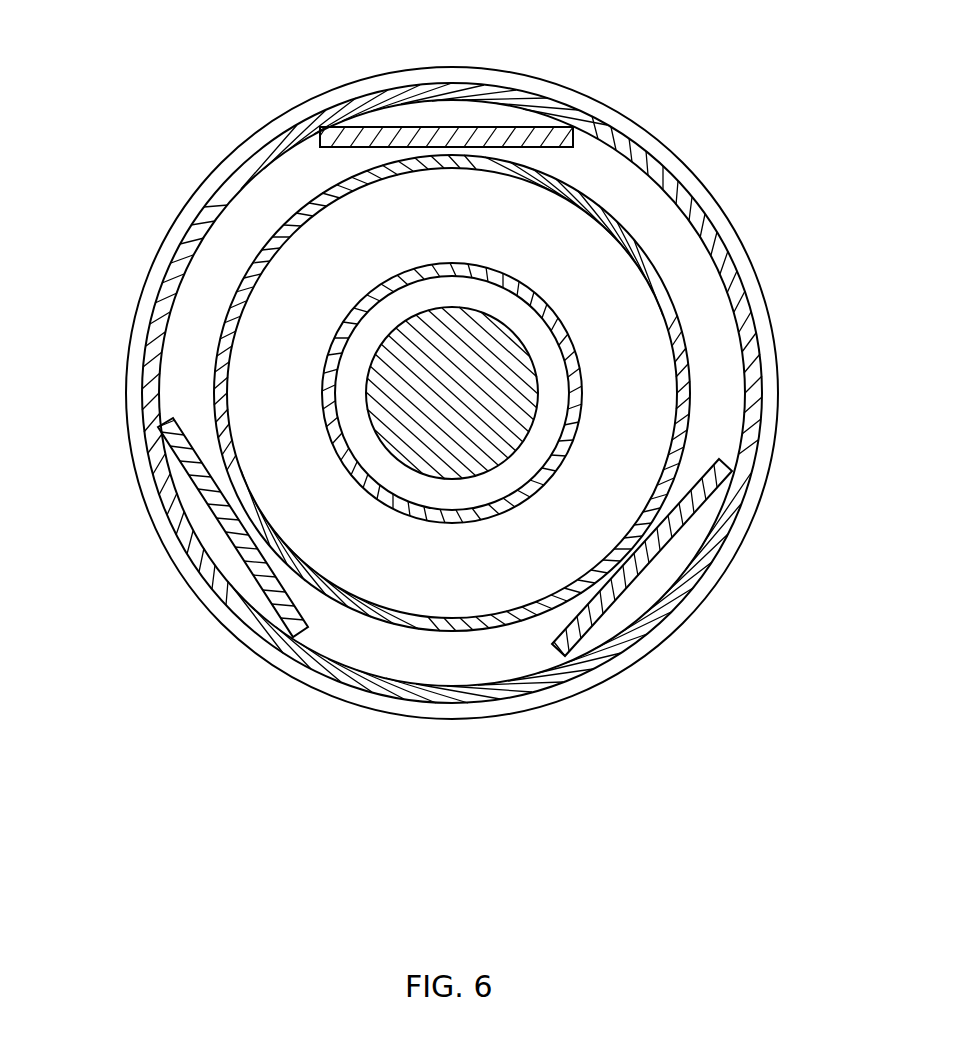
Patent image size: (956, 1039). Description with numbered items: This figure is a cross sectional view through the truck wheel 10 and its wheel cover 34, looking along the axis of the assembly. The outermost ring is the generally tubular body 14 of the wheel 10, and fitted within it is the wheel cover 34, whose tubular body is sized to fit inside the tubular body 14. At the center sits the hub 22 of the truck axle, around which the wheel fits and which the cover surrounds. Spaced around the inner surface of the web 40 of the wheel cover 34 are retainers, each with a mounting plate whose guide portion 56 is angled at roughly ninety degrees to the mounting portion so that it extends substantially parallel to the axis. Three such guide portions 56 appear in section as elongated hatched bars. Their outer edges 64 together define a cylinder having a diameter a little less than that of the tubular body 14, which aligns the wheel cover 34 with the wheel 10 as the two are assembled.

The truck wheel 10 is at (374, 702).
The tubular body 14 is at (455, 704).
The hub 22 is at (367, 365).
The wheel cover 34 is at (215, 366).
The web 40 is at (345, 310).
The guide portion 56 is at (415, 127).
The outer edges 64 is at (575, 140).